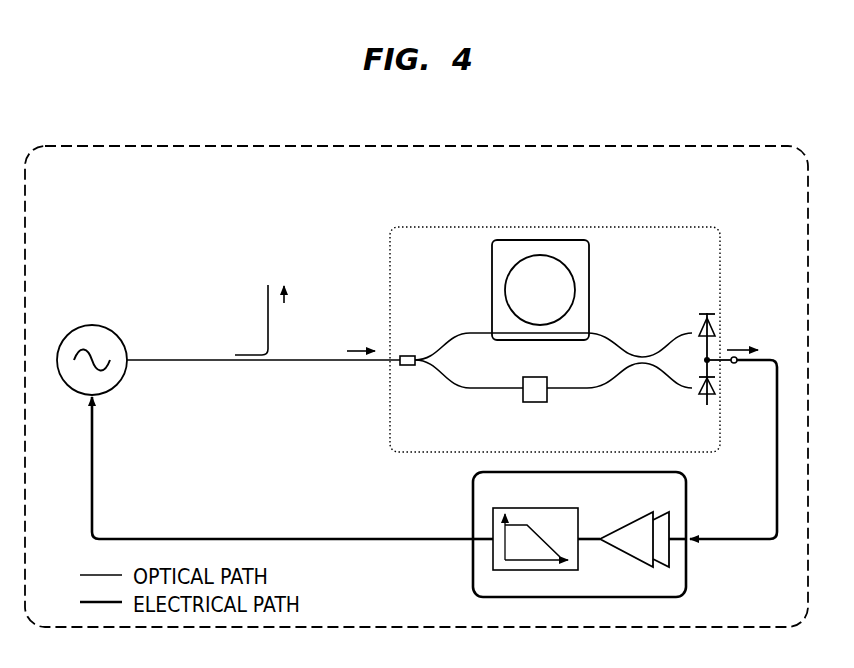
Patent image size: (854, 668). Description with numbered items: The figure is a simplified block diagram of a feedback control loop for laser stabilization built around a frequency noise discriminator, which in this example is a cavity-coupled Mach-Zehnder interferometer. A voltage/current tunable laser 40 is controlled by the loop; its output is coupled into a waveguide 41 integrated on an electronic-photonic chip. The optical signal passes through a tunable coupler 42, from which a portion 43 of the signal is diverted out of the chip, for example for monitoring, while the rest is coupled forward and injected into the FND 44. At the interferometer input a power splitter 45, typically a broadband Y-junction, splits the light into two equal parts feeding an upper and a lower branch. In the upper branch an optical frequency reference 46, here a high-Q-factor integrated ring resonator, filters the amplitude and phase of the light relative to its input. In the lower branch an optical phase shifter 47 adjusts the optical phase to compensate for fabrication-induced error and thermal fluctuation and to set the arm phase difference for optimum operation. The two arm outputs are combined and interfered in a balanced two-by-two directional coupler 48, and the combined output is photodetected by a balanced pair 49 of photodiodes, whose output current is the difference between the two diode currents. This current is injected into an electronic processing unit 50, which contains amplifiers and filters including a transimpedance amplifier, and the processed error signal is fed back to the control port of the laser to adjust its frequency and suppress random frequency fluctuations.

The voltage/current tunable laser 40 is at (88, 326).
The waveguide 41 is at (157, 363).
The tunable coupler 42 is at (241, 367).
The portion of the signal 43 is at (270, 290).
The frequency noise discriminator 44 is at (390, 243).
The power splitter 45 is at (392, 370).
The optical frequency reference 46 is at (592, 276).
The optical phase shifter 47 is at (549, 376).
The balanced 2×2 directional coupler 48 is at (641, 375).
The balanced pair of photodiodes 49 is at (720, 318).
The electronic processing unit 50 is at (690, 506).